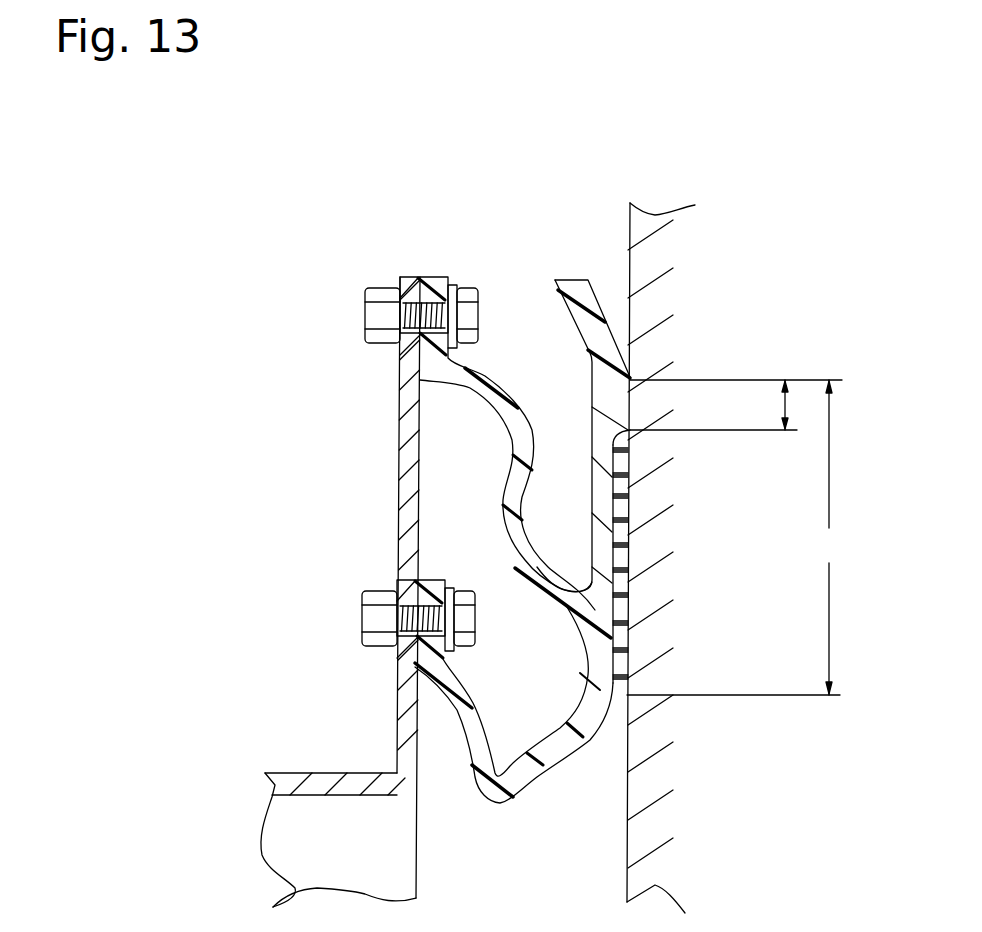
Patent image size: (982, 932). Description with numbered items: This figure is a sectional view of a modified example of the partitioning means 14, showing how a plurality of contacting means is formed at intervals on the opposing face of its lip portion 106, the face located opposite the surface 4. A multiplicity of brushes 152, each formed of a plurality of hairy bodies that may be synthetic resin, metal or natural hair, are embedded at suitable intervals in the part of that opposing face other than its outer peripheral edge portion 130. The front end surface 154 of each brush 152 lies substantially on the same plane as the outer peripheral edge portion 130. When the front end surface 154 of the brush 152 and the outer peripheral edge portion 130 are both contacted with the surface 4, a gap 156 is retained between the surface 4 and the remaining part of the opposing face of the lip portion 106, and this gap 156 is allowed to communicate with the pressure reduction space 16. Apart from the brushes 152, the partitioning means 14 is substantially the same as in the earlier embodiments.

The surface 4 is at (630, 255).
The partitioning means 14 is at (528, 806).
The pressure reduction space 16 is at (607, 758).
The lip portion 106 is at (743, 537).
The outer peripheral edge portion 130 is at (785, 408).
The brush 152 is at (622, 567).
The front end surface of the brush 154 is at (628, 495).
The gap 156 is at (622, 637).